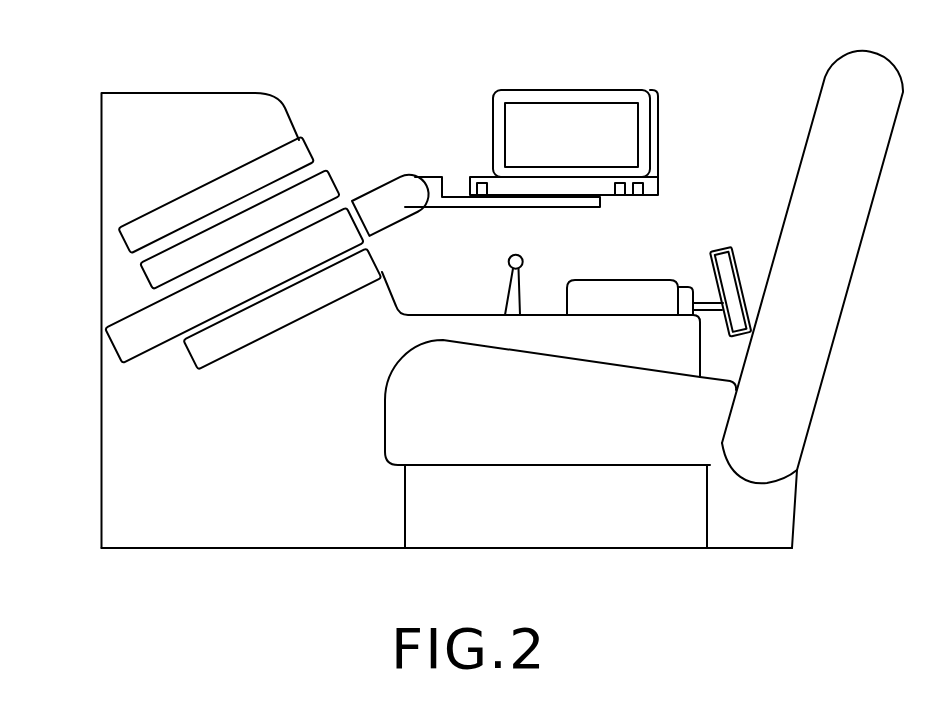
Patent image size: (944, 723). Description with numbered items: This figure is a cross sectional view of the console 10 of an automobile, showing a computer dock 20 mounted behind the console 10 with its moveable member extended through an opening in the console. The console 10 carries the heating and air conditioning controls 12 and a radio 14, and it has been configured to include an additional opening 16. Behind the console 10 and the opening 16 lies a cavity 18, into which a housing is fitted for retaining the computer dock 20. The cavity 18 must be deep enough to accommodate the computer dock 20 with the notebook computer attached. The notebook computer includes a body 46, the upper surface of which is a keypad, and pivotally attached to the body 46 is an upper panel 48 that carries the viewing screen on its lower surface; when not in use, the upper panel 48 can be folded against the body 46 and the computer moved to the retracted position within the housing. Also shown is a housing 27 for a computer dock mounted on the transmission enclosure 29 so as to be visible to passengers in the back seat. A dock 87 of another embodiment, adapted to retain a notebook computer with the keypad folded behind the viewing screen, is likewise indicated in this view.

The console 10 is at (284, 108).
The heating and air conditioning controls 12 is at (303, 138).
The radio 14 is at (332, 176).
The opening 16 is at (350, 202).
The cavity 18 is at (115, 343).
The computer dock 20 is at (408, 230).
The body 46 is at (659, 180).
The upper panel 48 is at (659, 120).
The housing 27 is at (624, 280).
The dock 87 is at (687, 287).
The transmission enclosure 29 is at (700, 350).